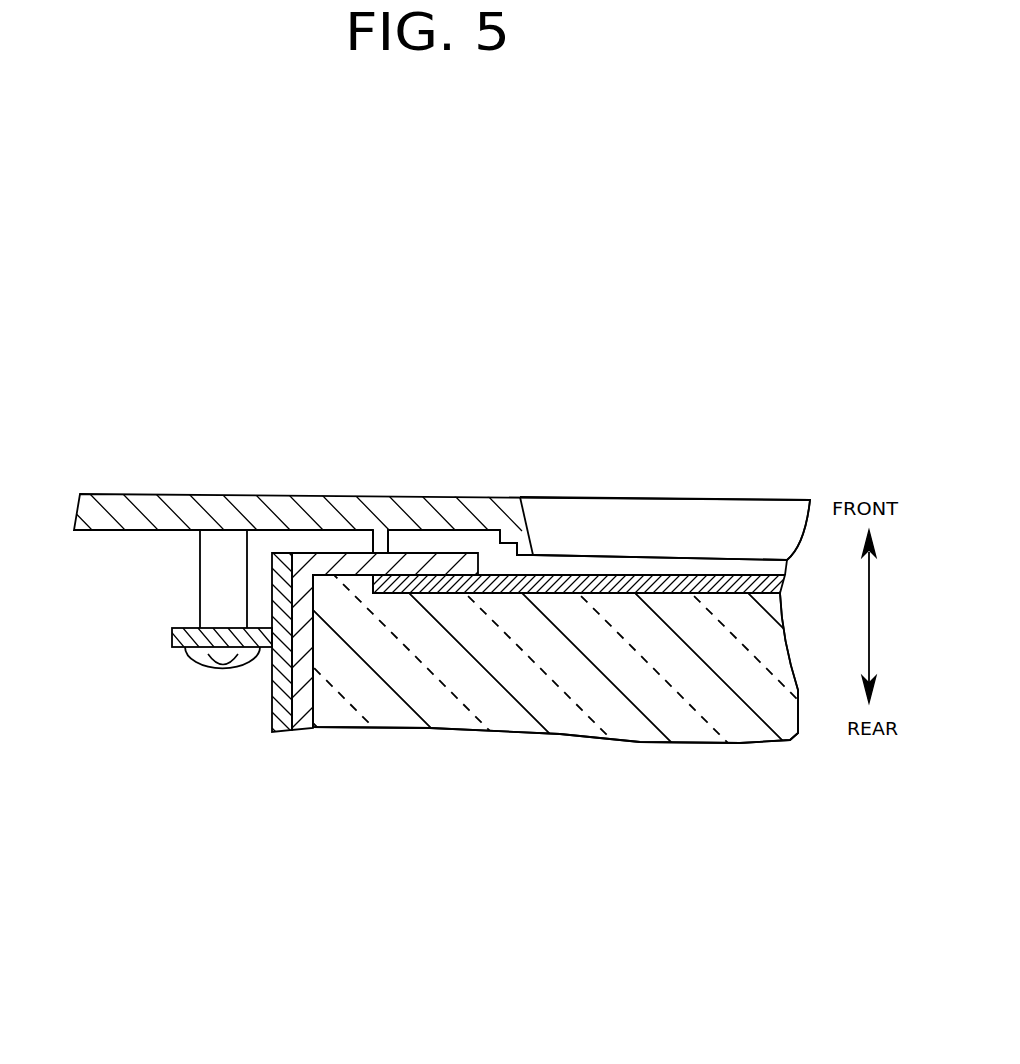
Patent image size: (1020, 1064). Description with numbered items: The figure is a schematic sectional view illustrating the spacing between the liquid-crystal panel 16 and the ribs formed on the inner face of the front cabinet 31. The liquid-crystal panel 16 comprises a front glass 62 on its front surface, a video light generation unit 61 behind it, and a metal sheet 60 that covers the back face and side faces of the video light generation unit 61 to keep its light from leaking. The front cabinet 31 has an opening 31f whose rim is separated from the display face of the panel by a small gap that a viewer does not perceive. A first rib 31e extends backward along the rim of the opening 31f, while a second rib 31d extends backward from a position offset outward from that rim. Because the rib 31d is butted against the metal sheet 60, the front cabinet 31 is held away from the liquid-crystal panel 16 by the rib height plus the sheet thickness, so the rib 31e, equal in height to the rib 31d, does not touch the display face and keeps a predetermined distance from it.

The front cabinet 31 is at (435, 494).
The rib (second rib) 31d is at (373, 543).
The rib (first rib) 31e is at (528, 553).
The opening 31f is at (664, 512).
The front glass 62 is at (580, 576).
The metal sheet 60 is at (272, 707).
The liquid-crystal panel 16 is at (398, 712).
The video light generation unit 61 is at (628, 718).